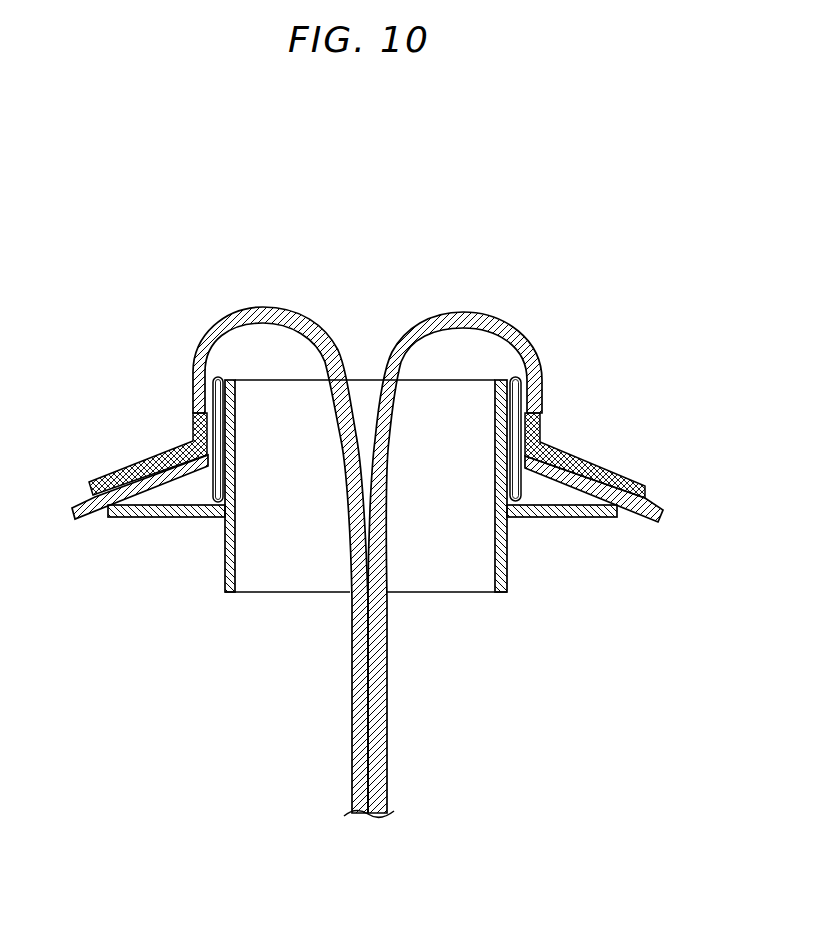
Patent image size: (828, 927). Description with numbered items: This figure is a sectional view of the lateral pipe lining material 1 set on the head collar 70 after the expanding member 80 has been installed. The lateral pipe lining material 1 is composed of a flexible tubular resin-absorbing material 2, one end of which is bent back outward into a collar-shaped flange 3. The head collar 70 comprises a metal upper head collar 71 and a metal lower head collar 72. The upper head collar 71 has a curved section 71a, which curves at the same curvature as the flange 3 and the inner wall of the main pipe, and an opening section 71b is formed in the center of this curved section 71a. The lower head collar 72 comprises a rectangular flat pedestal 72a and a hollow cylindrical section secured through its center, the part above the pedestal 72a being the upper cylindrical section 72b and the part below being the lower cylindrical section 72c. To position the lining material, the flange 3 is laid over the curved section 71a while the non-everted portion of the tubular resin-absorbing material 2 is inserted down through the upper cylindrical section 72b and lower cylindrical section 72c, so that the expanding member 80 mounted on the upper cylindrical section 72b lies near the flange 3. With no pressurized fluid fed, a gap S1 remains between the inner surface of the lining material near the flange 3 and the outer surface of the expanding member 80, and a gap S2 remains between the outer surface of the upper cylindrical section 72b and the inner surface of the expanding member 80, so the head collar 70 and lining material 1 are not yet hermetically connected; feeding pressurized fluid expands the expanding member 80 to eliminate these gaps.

The lateral pipe lining material 1 is at (322, 275).
The tubular resin-absorbing material 2 is at (385, 658).
The flange 3 is at (590, 458).
The head collar 70 is at (372, 462).
The upper head collar 71 is at (372, 458).
The curved section 71a is at (73, 504).
The opening section 71b is at (193, 443).
The lower head collar 72 is at (395, 462).
The pedestal 72a is at (555, 518).
The upper cylindrical section 72b is at (497, 378).
The lower cylindrical section 72c is at (223, 577).
The expanding member 80 is at (517, 378).
The gap S1 is at (523, 403).
The gap S2 is at (513, 382).